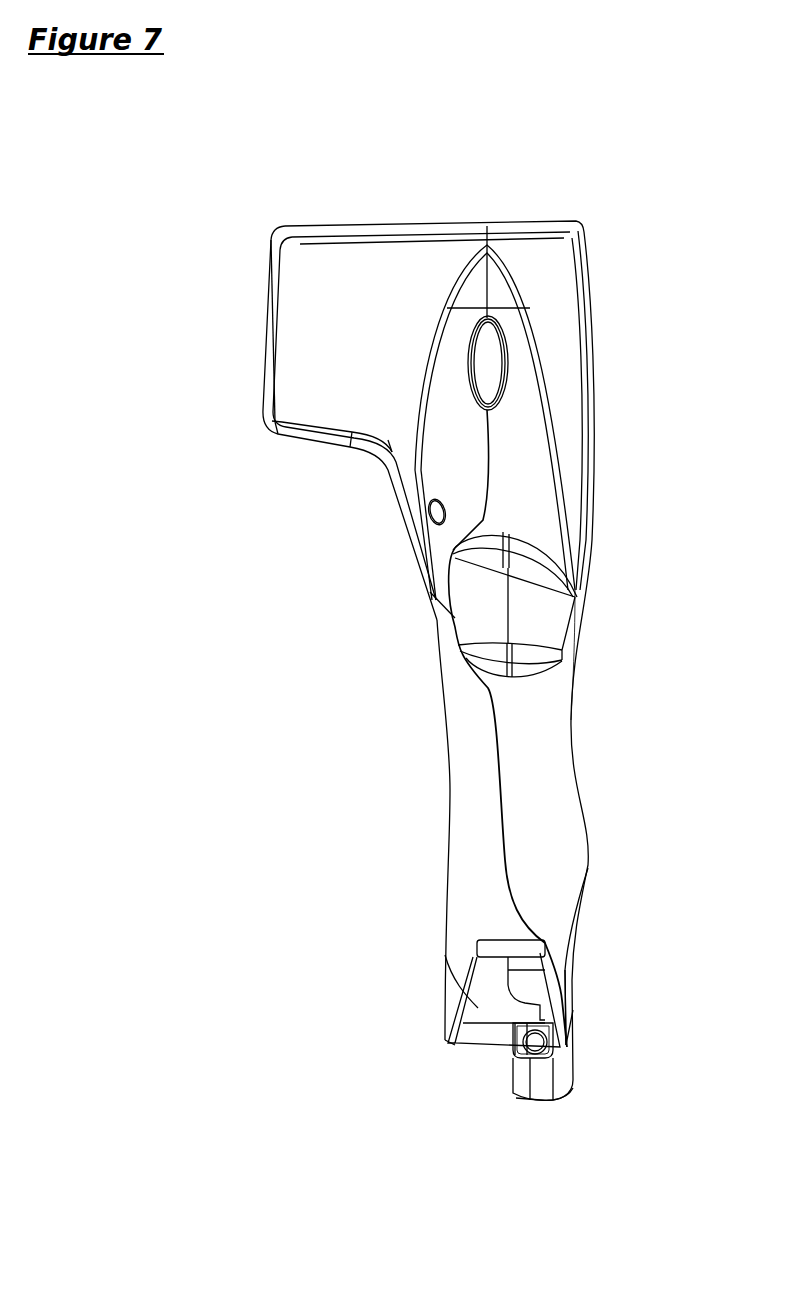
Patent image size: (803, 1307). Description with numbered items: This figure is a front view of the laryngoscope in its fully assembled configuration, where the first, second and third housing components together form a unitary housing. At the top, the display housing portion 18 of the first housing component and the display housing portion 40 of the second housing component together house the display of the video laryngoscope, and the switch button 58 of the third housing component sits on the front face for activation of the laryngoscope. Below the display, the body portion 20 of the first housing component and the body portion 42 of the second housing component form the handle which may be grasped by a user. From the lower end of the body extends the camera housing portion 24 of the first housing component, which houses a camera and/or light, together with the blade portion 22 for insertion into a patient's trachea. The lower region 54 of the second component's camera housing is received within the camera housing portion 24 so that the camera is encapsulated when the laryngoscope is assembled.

The display housing portion 18 is at (290, 387).
The display housing portion 40 is at (555, 312).
The switch button 58 is at (490, 388).
The body portion 20 is at (458, 783).
The body portion 42 is at (553, 783).
The camera housing portion 24 is at (535, 630).
The blade portion 22 is at (477, 1008).
The lower region 54 is at (563, 1058).